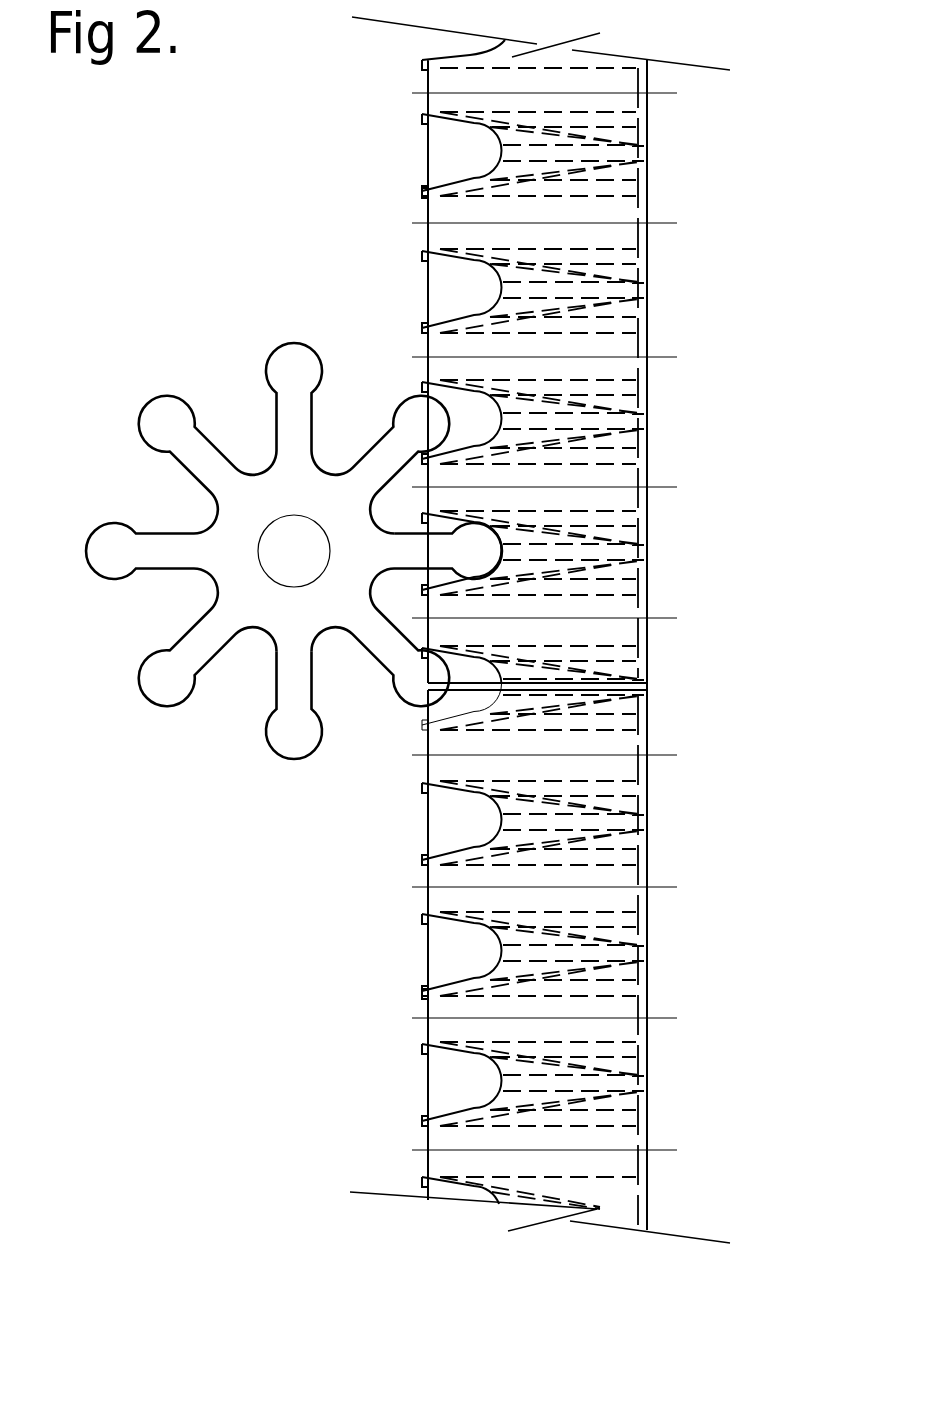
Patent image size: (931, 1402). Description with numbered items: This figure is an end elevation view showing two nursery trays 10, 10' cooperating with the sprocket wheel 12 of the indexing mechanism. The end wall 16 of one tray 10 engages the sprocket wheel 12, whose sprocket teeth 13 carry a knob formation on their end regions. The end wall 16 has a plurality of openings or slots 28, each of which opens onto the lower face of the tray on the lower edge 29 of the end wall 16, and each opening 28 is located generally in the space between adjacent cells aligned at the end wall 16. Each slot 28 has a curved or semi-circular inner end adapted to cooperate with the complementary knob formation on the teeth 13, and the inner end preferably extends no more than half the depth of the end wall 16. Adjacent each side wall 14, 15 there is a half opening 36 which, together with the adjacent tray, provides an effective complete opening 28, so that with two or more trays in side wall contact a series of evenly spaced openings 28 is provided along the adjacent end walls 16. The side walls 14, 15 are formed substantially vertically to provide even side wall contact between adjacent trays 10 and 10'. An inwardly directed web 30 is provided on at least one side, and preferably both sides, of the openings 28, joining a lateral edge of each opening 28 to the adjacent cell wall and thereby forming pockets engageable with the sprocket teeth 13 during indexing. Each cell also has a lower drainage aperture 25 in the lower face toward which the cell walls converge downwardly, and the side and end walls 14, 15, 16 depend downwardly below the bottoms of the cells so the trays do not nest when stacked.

The nursery tray 10 is at (576, 350).
The nursery tray 10' is at (577, 966).
The sprocket wheel 12 is at (308, 605).
The sprocket teeth 13 is at (264, 742).
The longitudinal side wall 14 is at (587, 691).
The longitudinal side wall 15 is at (644, 682).
The end wall 16 is at (612, 348).
The lower drainage aperture 25 is at (428, 100).
The opening 28 is at (424, 289).
The lower edge 29 is at (428, 210).
The inwardly directed web 30 is at (612, 452).
The half opening 36 is at (464, 670).